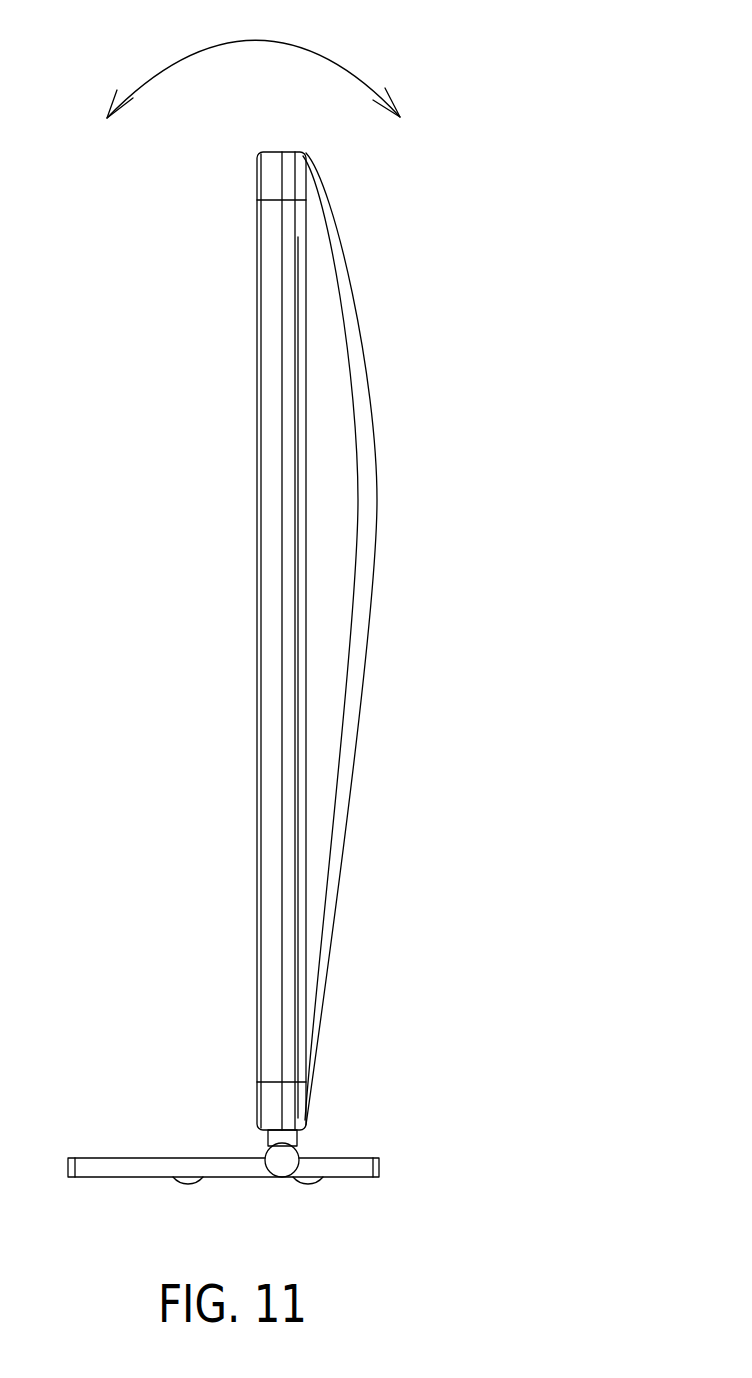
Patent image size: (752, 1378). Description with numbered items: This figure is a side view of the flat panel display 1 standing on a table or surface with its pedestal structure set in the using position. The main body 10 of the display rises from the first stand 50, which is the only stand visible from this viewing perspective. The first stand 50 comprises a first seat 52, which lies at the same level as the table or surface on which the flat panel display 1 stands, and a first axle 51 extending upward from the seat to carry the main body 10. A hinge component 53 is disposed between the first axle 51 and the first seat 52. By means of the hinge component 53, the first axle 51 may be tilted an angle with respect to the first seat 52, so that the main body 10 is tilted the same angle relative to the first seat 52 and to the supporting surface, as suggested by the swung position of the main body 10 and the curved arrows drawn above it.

The flat panel display 1 is at (485, 107).
The main body 10 is at (278, 547).
The first stand 50 is at (352, 1137).
The first axle 51 is at (270, 1138).
The first seat 52 is at (107, 1165).
The hinge component 53 is at (280, 1163).